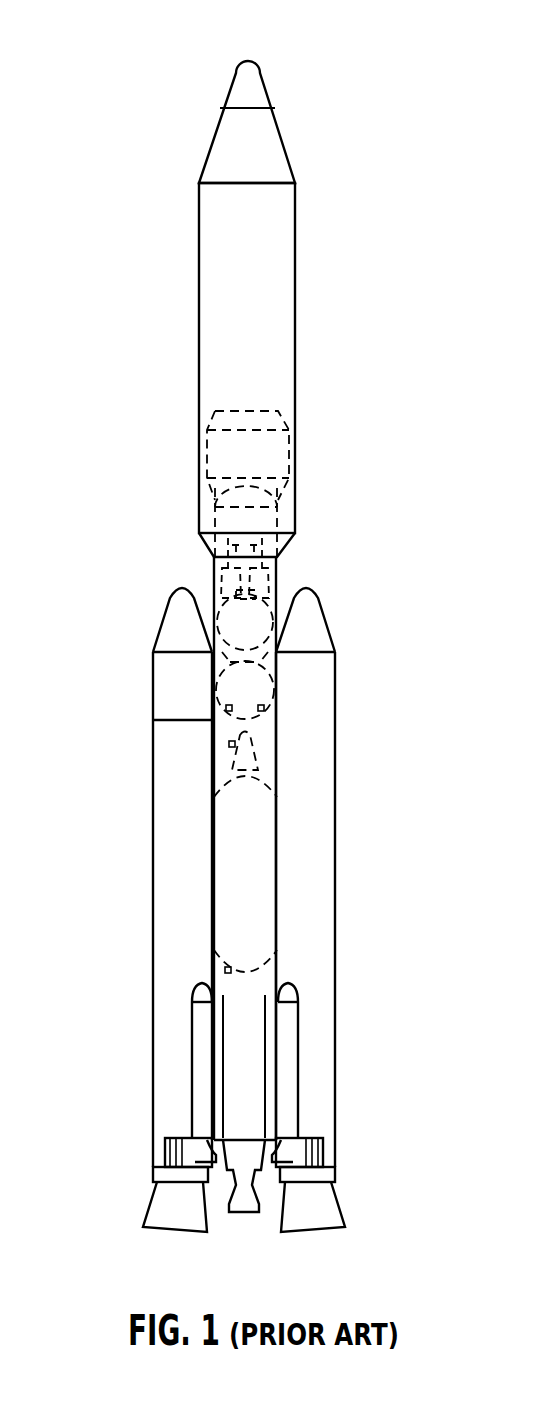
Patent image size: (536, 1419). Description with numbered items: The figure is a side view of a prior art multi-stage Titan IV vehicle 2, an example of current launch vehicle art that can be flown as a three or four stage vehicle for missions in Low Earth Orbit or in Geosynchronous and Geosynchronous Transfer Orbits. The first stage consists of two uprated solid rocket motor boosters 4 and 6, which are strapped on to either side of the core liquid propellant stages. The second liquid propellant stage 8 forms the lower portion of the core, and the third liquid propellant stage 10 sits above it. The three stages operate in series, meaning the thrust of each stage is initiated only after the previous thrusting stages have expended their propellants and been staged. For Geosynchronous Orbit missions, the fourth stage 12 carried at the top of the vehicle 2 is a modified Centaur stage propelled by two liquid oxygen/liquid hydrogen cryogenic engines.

The Titan IV vehicle 2 is at (260, 60).
The uprated solid rocket motor booster 4 is at (153, 847).
The uprated solid rocket motor booster 6 is at (337, 892).
The second liquid propellant stage 8 is at (253, 993).
The third liquid propellant stage 10 is at (288, 567).
The fourth stage 12 is at (305, 459).